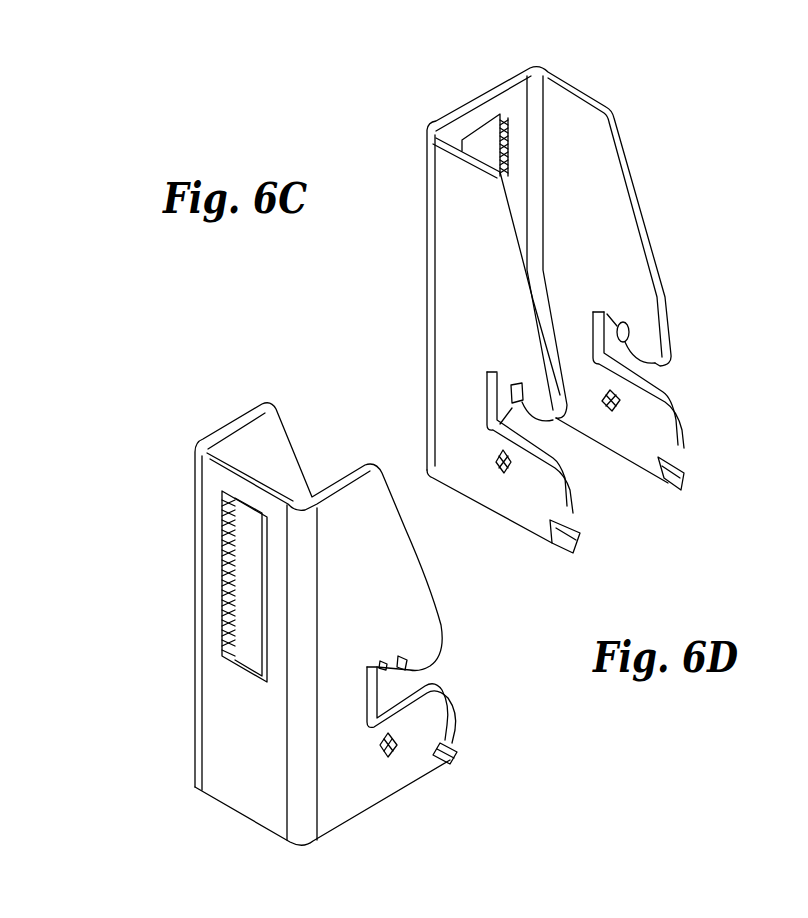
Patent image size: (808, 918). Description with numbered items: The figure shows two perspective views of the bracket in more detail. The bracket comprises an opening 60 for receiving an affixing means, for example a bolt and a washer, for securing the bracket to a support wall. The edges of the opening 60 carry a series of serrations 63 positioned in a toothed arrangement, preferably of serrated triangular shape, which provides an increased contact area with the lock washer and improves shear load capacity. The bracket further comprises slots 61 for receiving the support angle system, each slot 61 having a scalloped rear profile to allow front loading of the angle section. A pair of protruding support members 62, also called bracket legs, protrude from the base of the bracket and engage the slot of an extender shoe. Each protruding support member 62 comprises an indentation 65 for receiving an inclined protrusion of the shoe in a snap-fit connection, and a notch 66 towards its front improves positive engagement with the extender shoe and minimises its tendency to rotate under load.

In FIG. 6C, the opening 60 is at (240, 593).
In FIG. 6C, the slot 61 is at (400, 631).
In FIG. 6D, the slot 61 is at (497, 375).
In FIG. 6C, the protruding support member 62 is at (450, 740).
In FIG. 6D, the protruding support member 62 is at (667, 397).
In FIG. 6C, the serrations 63 is at (223, 530).
In FIG. 6D, the serrations 63 is at (483, 127).
In FIG. 6C, the indentation 65 is at (390, 757).
In FIG. 6D, the indentation 65 is at (500, 465).
In FIG. 6C, the notch 66 is at (443, 748).